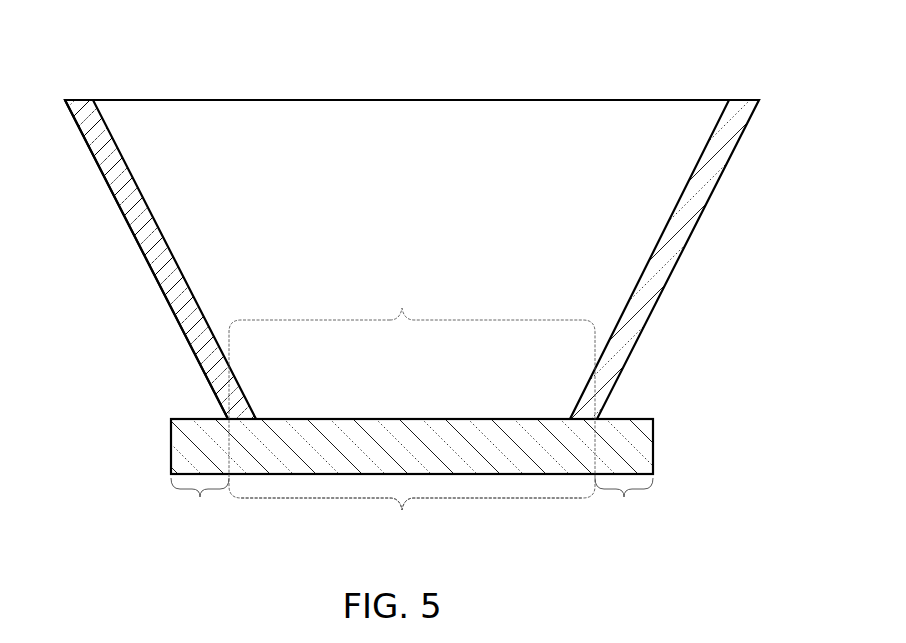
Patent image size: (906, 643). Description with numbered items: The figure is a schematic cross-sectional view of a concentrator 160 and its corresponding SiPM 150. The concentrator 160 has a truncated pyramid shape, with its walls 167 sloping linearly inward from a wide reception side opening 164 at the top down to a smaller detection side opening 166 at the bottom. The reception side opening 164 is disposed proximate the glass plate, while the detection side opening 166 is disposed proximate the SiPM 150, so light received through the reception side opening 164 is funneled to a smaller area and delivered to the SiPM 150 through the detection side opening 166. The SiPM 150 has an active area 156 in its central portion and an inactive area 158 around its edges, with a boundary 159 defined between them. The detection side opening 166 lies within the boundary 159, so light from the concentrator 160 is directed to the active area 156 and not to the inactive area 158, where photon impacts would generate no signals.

The SiPM 150 is at (171, 433).
The active area 156 is at (412, 520).
The inactive area 158 is at (412, 502).
The boundary 159 is at (412, 395).
The concentrator 160 is at (137, 239).
The reception side opening 164 is at (442, 92).
The detection side opening 166 is at (379, 415).
The walls 167 is at (145, 197).